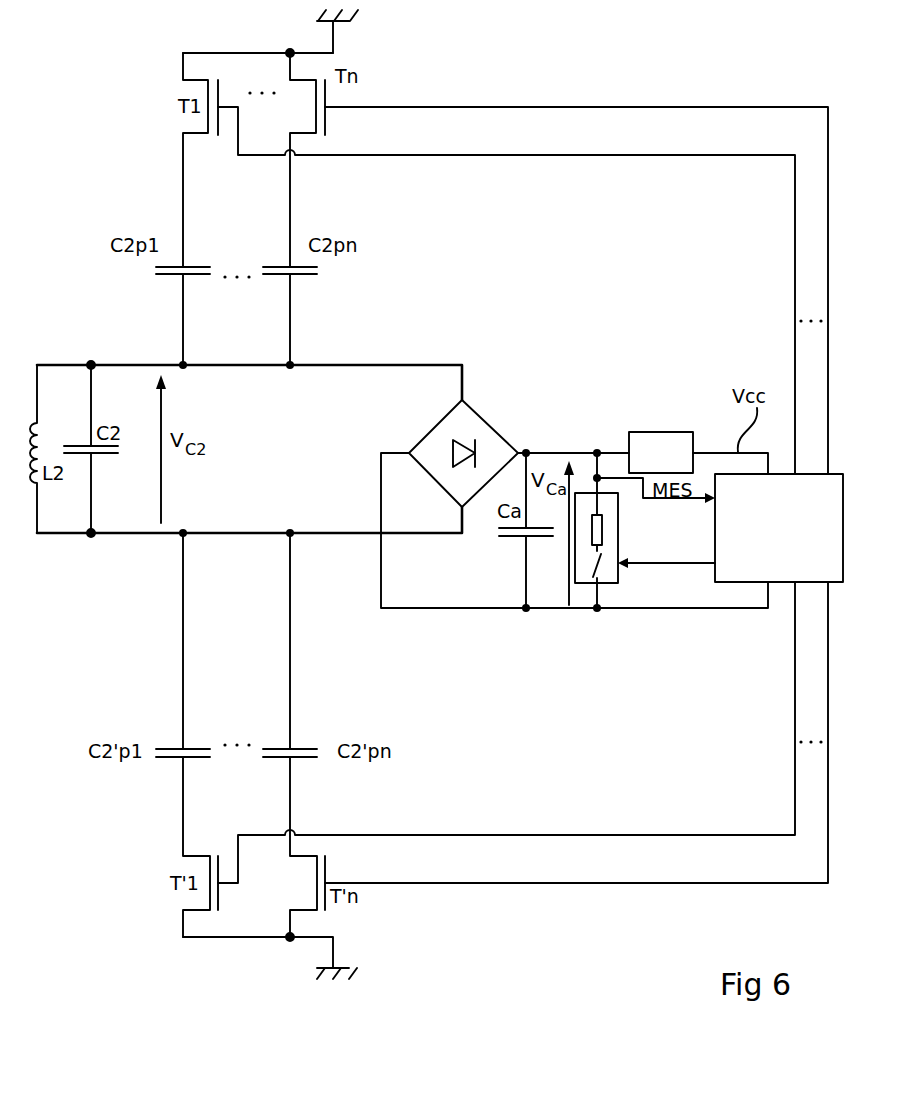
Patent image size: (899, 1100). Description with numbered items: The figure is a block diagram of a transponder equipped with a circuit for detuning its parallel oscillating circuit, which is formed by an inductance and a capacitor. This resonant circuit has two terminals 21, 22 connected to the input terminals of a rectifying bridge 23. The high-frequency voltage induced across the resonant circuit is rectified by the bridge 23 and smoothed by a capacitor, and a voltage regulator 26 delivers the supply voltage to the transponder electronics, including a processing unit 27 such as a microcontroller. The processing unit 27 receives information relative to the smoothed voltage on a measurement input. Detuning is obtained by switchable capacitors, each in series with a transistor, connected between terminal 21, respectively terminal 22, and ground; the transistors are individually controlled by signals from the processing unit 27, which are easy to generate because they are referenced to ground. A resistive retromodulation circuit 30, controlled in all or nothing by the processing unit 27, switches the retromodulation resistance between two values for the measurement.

The terminal 21 is at (91, 365).
The terminal 22 is at (91, 533).
The rectifying bridge 23 is at (490, 424).
The voltage regulator 26 is at (663, 432).
The processing unit 27 is at (737, 583).
The resistive retromodulation circuit 30 is at (618, 530).